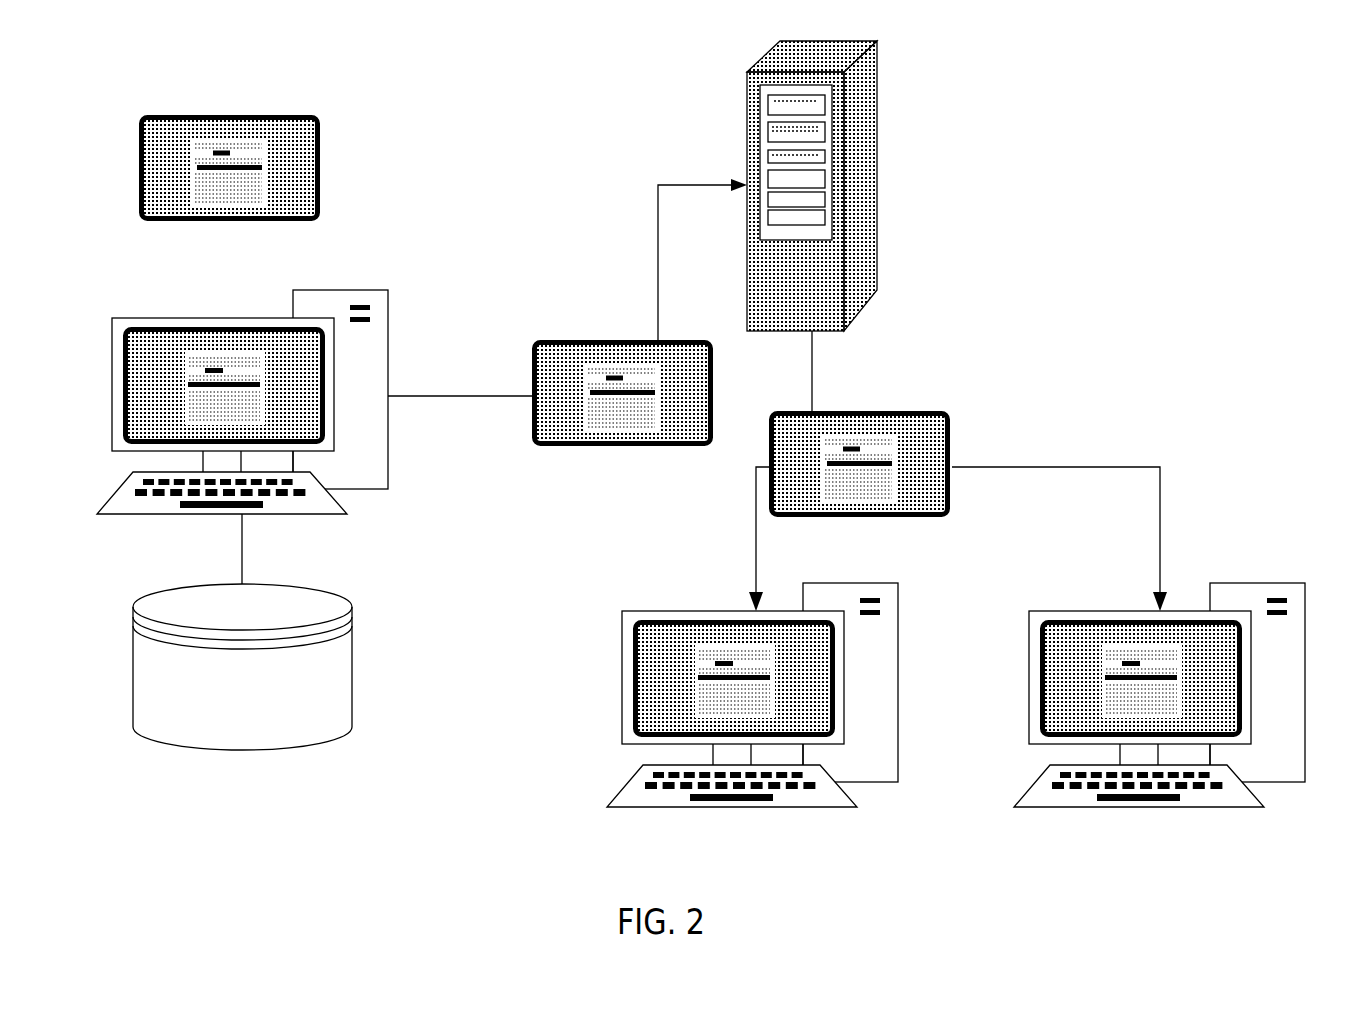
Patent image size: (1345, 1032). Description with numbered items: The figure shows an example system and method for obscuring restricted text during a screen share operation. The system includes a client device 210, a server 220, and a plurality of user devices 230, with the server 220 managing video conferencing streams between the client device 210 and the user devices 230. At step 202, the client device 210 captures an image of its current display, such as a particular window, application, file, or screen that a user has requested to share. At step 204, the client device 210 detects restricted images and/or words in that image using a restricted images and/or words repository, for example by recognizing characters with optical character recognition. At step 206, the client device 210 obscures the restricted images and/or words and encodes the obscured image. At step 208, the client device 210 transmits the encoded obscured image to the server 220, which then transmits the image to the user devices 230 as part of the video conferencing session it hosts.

The capture image of display step 202 is at (242, 386).
The detect restricted images or words step 204 is at (242, 698).
The obscure restricted images or words and encode obscured image step 206 is at (240, 121).
The transmit encoded obscured image step 208 is at (567, 344).
The client device 210 is at (242, 421).
The server 220 is at (945, 302).
The user devices 230 is at (956, 712).